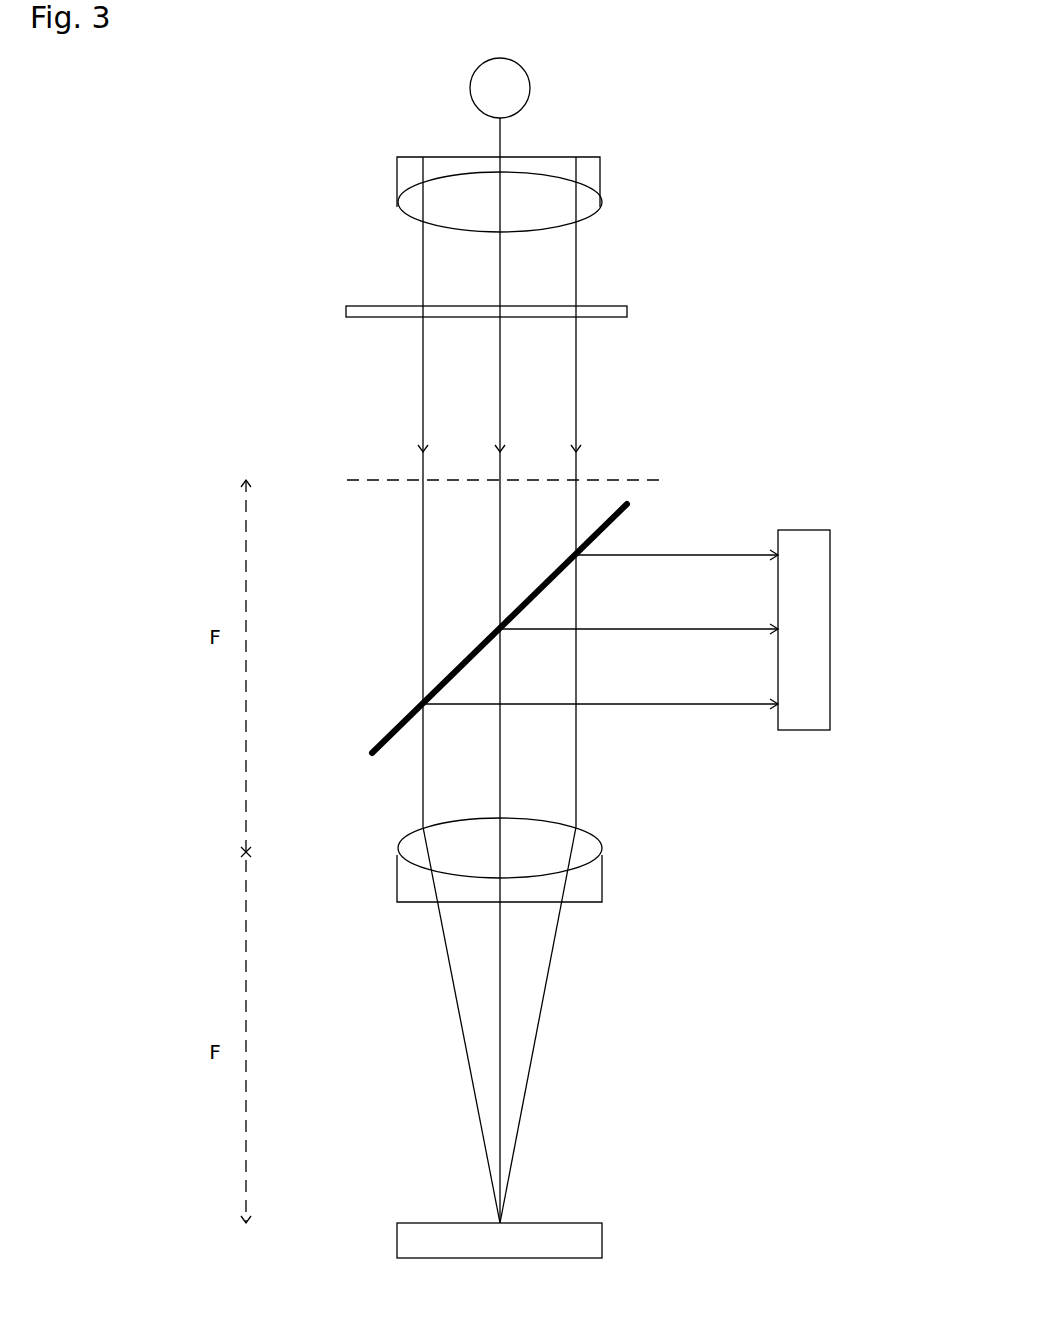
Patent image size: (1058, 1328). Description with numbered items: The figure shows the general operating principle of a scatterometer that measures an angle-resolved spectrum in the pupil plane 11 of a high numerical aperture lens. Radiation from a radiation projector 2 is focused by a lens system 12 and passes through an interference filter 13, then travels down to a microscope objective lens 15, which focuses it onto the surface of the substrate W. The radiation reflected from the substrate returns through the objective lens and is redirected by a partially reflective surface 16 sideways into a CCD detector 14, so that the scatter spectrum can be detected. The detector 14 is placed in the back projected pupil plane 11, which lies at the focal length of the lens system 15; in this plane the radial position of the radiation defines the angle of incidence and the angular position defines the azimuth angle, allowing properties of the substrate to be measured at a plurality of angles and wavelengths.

The radiation projector 2 is at (491, 101).
The lens system 12 is at (397, 190).
The interference filter 13 is at (628, 308).
The pupil plane 11 is at (667, 480).
The partially reflective surface 16 is at (628, 512).
The CCD detector 14 is at (830, 692).
The microscope objective lens 15 is at (397, 877).
The substrate W is at (602, 1243).